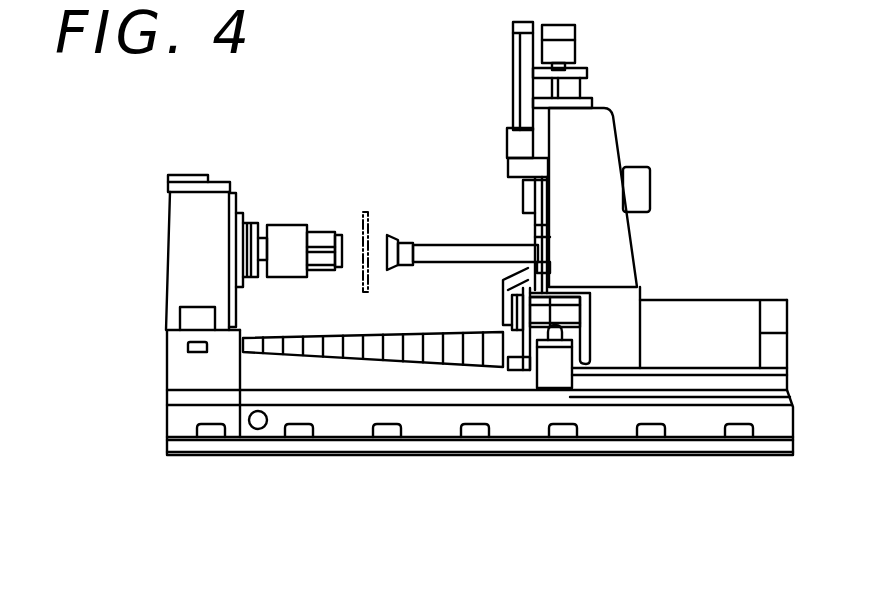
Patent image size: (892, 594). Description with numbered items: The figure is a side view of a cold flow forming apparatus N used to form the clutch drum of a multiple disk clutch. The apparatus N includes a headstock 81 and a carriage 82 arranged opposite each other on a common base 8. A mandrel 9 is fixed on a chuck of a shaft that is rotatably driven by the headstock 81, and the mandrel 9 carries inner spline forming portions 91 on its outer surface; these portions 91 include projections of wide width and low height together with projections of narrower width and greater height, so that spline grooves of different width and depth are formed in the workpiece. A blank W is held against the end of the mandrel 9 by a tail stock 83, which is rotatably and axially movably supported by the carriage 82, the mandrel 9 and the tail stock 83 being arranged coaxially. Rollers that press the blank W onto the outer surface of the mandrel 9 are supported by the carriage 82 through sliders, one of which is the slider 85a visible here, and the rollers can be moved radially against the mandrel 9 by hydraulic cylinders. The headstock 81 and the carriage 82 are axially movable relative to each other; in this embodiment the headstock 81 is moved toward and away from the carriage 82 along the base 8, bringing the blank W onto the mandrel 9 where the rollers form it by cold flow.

The headstock 81 is at (203, 208).
The mandrel 9 is at (291, 238).
The inner spline forming portions 91 is at (331, 232).
The blank W is at (369, 212).
The apparatus N is at (338, 73).
The tail stock 83 is at (428, 245).
The slider 85a is at (516, 72).
The carriage 82 is at (616, 264).
The base 8 is at (416, 383).